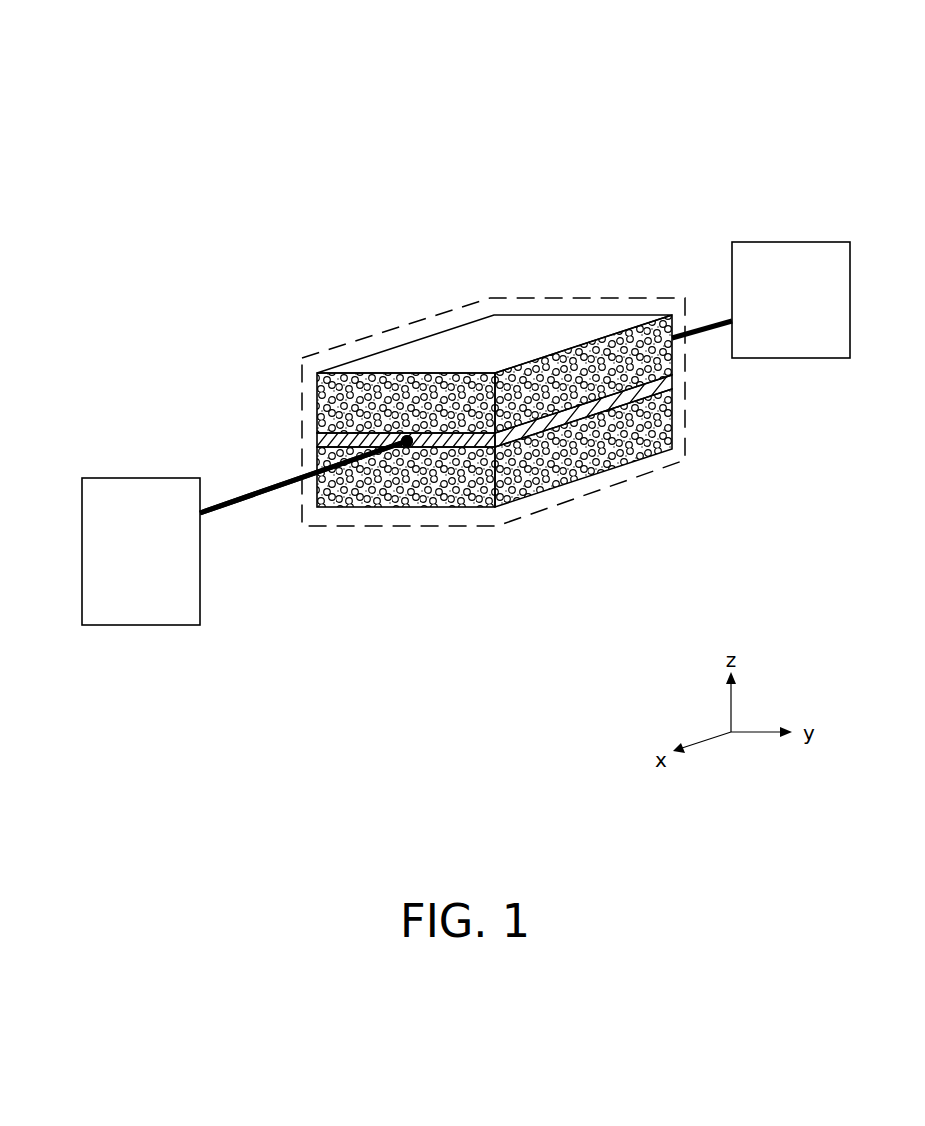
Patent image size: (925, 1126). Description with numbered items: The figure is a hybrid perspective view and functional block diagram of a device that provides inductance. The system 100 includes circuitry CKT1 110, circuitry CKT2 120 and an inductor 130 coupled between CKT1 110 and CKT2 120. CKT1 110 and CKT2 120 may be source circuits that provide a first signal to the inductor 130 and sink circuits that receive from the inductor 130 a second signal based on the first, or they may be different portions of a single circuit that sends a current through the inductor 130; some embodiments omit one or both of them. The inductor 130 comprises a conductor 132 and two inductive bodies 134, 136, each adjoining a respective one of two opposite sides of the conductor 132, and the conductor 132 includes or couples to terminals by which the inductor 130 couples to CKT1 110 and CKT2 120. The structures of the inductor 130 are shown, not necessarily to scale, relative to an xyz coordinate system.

The system 100 is at (74, 81).
The circuitry CKT1 110 is at (121, 579).
The circuitry CKT2 120 is at (771, 325).
The inductor 130 is at (323, 352).
The conductor 132 is at (686, 383).
The inductive body 134 is at (490, 328).
The inductive body 136 is at (531, 485).